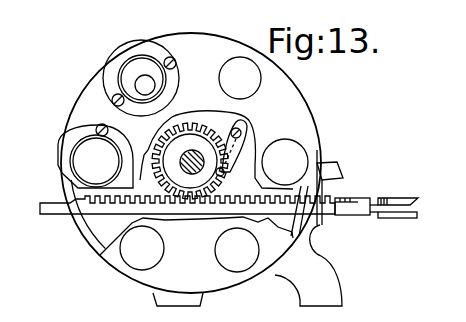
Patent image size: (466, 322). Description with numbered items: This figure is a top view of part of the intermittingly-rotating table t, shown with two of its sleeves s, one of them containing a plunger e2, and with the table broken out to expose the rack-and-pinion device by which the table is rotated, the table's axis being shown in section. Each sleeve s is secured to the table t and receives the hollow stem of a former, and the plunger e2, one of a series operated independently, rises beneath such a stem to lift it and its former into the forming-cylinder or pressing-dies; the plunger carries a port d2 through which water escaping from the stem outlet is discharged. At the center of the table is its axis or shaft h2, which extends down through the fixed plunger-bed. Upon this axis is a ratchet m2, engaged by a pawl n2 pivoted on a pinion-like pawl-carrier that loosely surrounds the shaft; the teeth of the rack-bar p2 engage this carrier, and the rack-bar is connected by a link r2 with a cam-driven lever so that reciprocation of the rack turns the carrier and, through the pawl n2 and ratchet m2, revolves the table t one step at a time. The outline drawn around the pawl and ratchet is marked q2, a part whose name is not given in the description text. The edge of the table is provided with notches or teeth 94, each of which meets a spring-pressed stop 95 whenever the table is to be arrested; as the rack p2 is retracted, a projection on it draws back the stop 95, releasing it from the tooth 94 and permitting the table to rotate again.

The notches or teeth 94 is at (258, 50).
The stop 95 is at (343, 179).
The rotating table t is at (231, 181).
The plunger e2 is at (133, 67).
The port d2 is at (145, 90).
The sleeve s is at (120, 108).
The lever housing q2 is at (203, 138).
The ratchet m2 is at (157, 143).
The central axis or shaft h2 is at (182, 166).
The pawl n2 is at (227, 167).
The rack-bar p2 is at (205, 210).
The link r2 is at (386, 198).